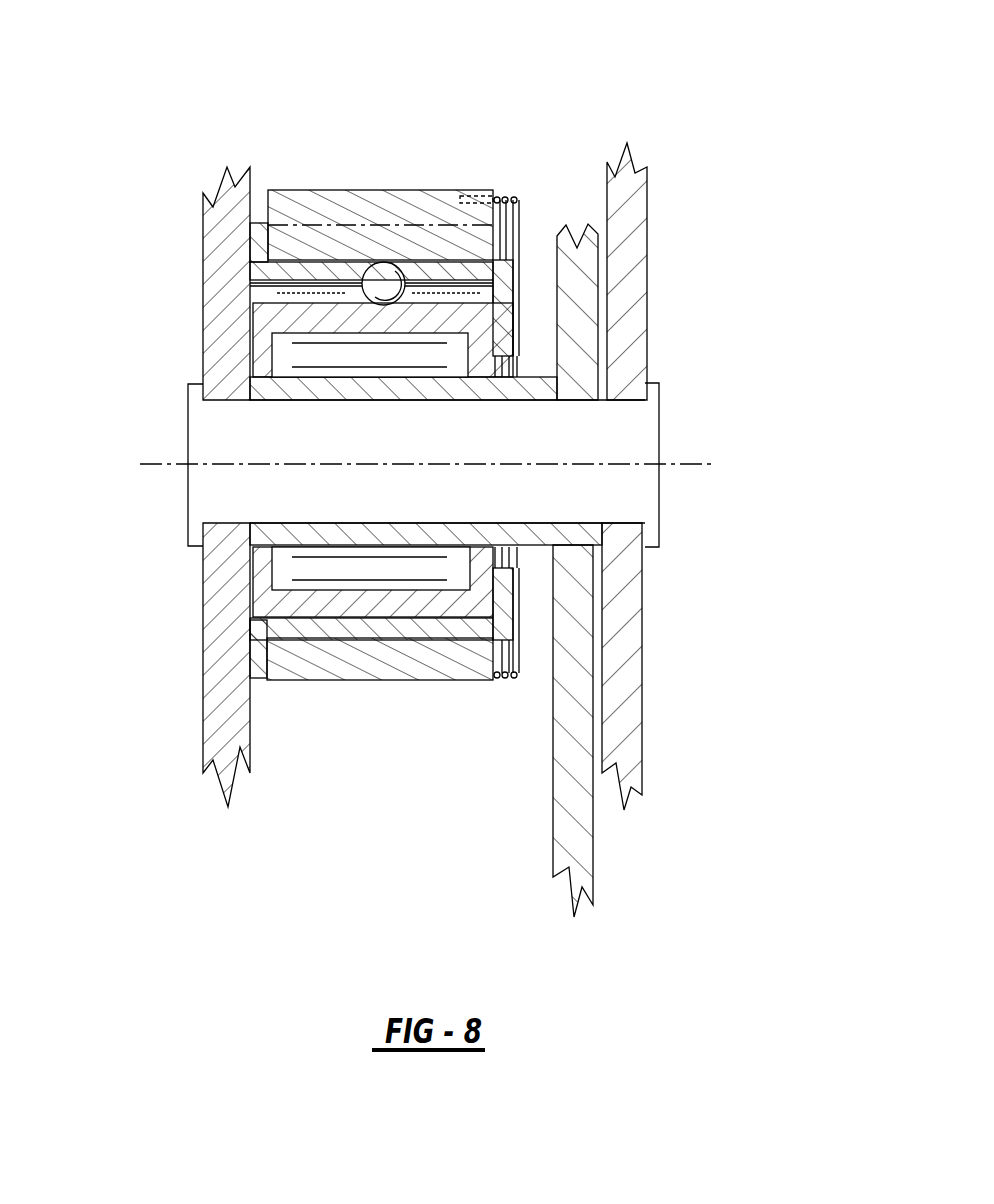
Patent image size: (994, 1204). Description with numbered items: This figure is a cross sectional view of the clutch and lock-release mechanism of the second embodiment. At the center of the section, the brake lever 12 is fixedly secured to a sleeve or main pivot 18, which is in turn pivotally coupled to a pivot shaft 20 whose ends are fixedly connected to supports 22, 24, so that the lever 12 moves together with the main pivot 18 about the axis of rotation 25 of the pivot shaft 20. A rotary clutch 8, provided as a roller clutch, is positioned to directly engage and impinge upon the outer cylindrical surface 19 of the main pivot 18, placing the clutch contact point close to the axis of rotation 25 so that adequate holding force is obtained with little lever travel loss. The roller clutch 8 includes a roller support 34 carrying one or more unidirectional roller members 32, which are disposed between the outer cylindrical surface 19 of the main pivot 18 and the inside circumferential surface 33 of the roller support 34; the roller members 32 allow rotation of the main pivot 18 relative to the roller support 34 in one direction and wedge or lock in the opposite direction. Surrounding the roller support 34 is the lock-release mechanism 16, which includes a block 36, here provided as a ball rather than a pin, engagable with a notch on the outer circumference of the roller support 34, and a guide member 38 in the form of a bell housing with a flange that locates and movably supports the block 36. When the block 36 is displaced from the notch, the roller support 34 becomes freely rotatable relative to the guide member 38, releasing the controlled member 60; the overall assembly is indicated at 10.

The rotary clutch 8 is at (370, 590).
The clutch assembly 10 is at (606, 126).
The lever 12 is at (580, 823).
The lock-release mechanism 16 is at (327, 180).
The main pivot 18 is at (578, 378).
The outer cylindrical surface 19 is at (535, 548).
The pivot shaft 20 is at (637, 447).
The support 22 is at (217, 630).
The support 24 is at (628, 600).
The axis of rotation 25 is at (313, 467).
The roller members 32 is at (295, 353).
The inside circumferential surface 33 is at (397, 587).
The roller support 34 is at (440, 322).
The block 36 is at (383, 273).
The guide member 38 is at (500, 275).
The controlled member 60 is at (315, 302).